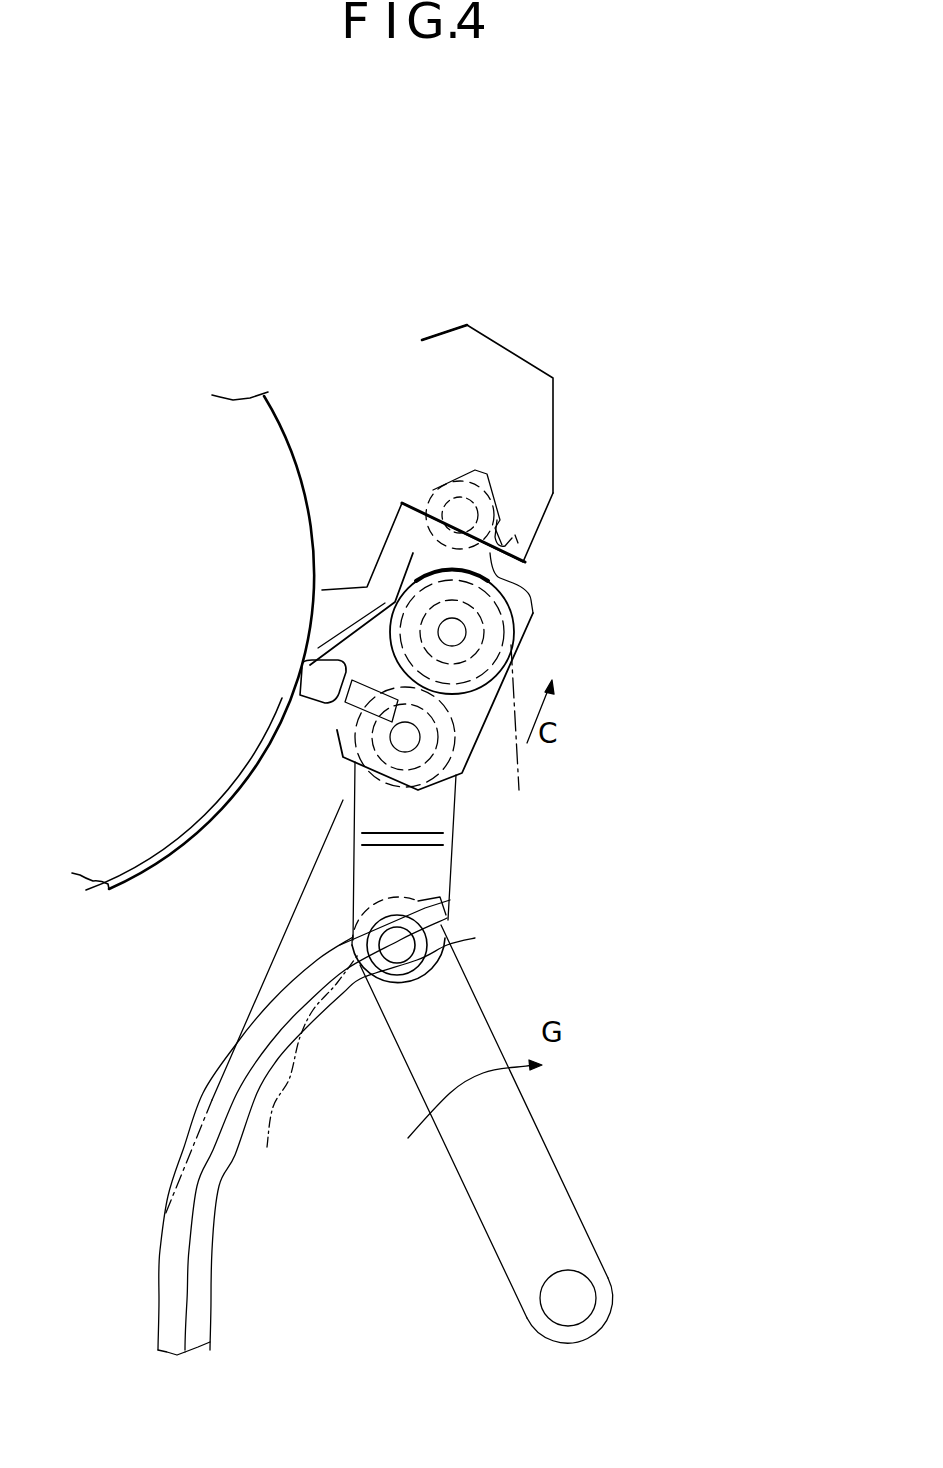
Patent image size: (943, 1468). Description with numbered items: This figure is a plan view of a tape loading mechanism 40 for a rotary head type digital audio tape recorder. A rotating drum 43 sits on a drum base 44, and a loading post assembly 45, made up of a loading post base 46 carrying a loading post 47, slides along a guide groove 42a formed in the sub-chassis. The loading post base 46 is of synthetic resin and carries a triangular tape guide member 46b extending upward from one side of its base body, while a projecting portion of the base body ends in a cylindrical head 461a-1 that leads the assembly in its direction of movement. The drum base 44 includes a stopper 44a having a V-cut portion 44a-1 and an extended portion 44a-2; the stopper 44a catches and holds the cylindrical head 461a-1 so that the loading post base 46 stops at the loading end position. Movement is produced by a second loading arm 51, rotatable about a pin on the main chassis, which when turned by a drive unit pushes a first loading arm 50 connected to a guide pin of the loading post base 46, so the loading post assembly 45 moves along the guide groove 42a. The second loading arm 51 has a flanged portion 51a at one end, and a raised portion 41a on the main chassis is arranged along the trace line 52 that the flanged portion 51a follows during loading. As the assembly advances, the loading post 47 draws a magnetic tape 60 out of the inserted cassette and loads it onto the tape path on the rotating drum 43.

The tape loading mechanism 40 is at (660, 102).
The rotating drum 43 is at (263, 420).
The drum base 44 is at (498, 355).
The stopper 44a is at (533, 497).
The V-cut portion 44a-1 is at (532, 535).
The extended portion 44a-2 is at (535, 585).
The cylindrical head 461a-1 is at (473, 477).
The loading post 47 is at (418, 574).
The loading post assembly 45 is at (536, 642).
The loading post base 46 is at (481, 746).
The tape guide member 46b is at (323, 650).
The magnetic tape 60 is at (520, 777).
The first loading arm 50 is at (455, 840).
The flanged portion 51a is at (446, 933).
The second loading arm 51 is at (520, 1132).
The trace line 52 is at (170, 1210).
The guide groove 42a is at (267, 1147).
The raised portion 41a is at (210, 1290).